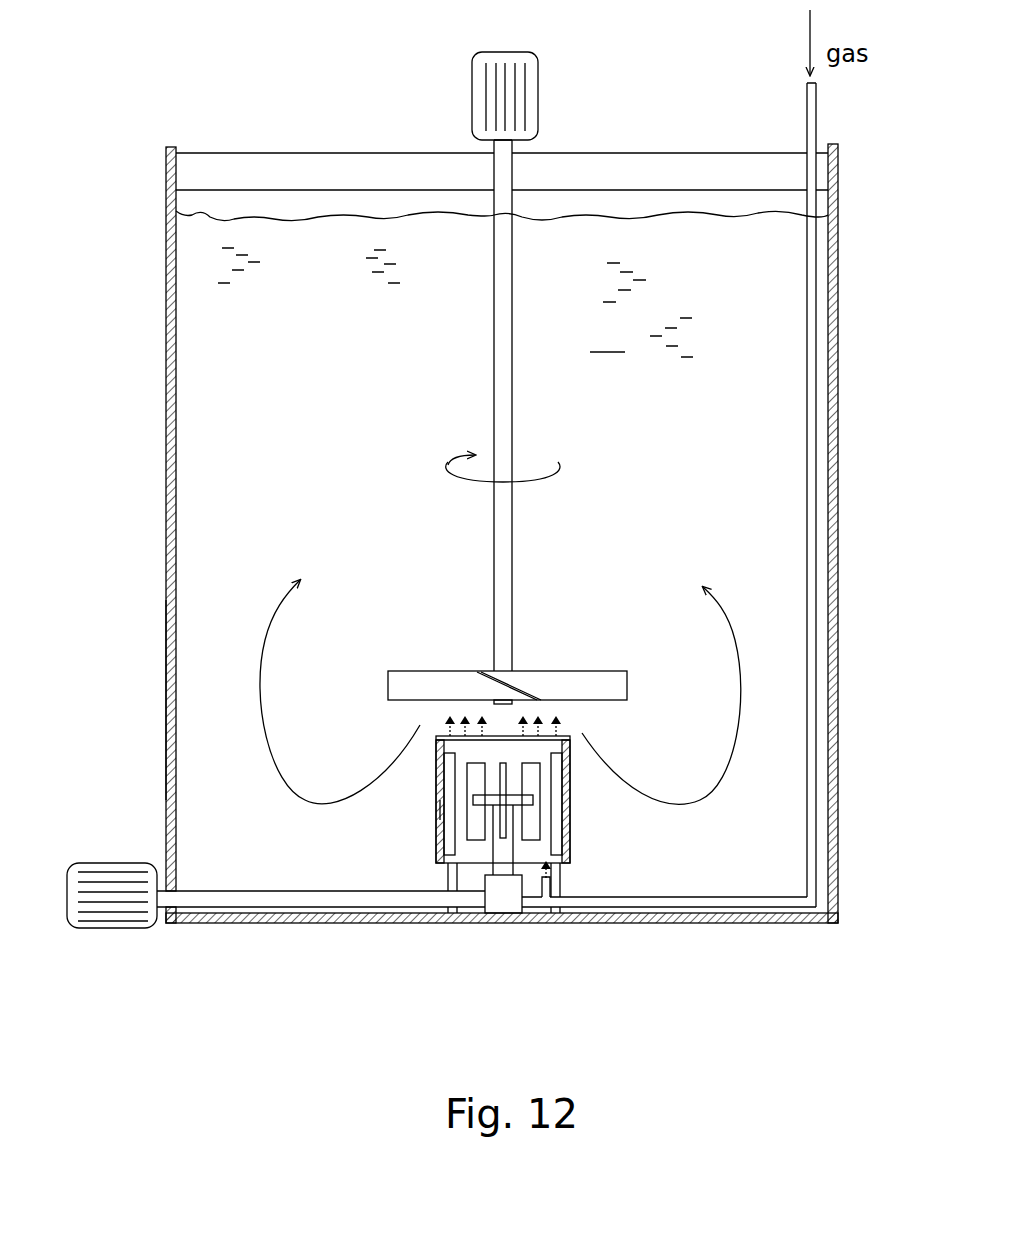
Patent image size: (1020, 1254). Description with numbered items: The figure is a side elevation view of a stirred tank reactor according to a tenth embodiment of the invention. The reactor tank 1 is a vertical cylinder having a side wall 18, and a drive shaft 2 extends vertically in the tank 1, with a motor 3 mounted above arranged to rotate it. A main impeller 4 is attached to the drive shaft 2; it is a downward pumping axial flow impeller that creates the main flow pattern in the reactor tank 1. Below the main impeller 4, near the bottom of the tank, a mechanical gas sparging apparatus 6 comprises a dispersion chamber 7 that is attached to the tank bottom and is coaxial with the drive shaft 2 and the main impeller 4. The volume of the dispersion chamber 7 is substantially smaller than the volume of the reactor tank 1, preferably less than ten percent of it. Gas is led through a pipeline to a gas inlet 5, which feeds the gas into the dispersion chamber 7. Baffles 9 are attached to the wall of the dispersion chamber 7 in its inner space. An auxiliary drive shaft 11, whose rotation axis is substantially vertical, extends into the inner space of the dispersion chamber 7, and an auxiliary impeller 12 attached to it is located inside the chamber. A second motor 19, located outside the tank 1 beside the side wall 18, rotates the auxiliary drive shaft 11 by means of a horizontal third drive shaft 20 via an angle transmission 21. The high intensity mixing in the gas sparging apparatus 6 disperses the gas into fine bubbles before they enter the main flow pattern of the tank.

The reactor tank 1 is at (166, 350).
The drive shaft 2 is at (494, 266).
The motor 3 is at (472, 80).
The main impeller 4 is at (388, 686).
The gas inlet 5 is at (555, 878).
The gas sparging apparatus 6 is at (400, 815).
The dispersion chamber 7 is at (570, 810).
The baffles 9 is at (448, 838).
The auxiliary drive shaft 11 is at (510, 860).
The auxiliary impeller 12 is at (530, 778).
The side wall 18 is at (166, 738).
The second motor 19 is at (100, 878).
The third drive shaft 20 is at (282, 900).
The angle transmission 21 is at (495, 905).